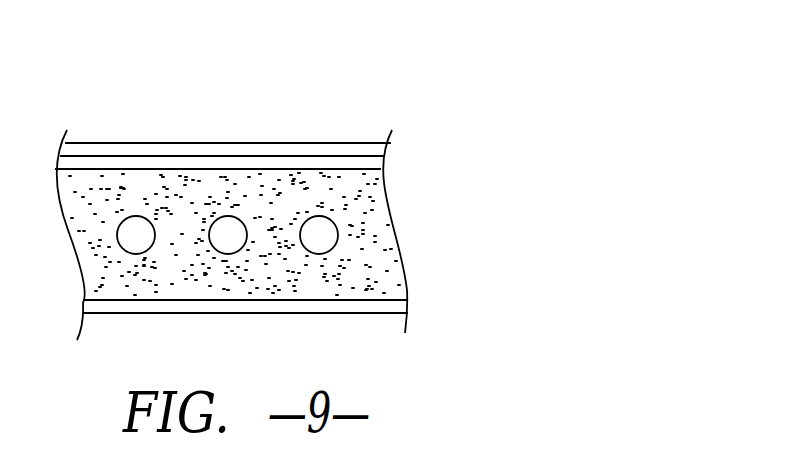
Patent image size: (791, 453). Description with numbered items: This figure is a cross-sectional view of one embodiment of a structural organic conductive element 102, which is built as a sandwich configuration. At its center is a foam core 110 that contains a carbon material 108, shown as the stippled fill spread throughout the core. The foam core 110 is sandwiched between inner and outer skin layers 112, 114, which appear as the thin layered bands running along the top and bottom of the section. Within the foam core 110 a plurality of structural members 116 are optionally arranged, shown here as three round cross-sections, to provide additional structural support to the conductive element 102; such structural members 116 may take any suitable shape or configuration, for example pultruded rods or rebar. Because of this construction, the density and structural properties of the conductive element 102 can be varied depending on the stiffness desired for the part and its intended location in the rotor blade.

The structural organic conductive element 102 is at (340, 104).
The carbon material 108 is at (250, 192).
The foam core 110 is at (347, 272).
The inner skin layer 112 is at (112, 162).
The outer skin layer 114 is at (172, 158).
The structural members 116 is at (322, 235).